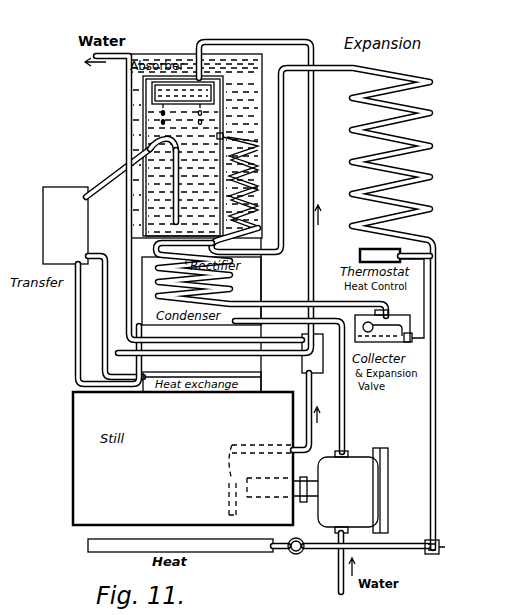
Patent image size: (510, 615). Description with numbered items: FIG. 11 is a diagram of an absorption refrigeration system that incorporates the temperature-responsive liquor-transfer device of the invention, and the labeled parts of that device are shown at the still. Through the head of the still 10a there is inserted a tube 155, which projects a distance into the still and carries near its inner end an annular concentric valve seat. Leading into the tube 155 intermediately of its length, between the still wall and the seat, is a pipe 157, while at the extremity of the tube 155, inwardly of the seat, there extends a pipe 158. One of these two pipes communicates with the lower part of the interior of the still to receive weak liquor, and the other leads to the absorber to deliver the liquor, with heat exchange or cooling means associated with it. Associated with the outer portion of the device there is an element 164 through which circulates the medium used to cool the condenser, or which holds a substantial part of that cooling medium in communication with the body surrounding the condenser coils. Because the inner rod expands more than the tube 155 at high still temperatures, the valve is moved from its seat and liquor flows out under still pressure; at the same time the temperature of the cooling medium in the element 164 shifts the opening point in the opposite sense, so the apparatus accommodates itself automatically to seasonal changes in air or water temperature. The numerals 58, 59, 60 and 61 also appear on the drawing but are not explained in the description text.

The spray box 58 is at (152, 91).
The absorber inlet pipe 61 is at (170, 133).
The pipe bend 60 is at (158, 152).
The transfer pipe 59 is at (114, 178).
The head of the still 10a is at (302, 420).
The pipe 157 is at (260, 447).
The tube 155 is at (247, 480).
The pipe 158 is at (229, 508).
The element 164 is at (340, 490).